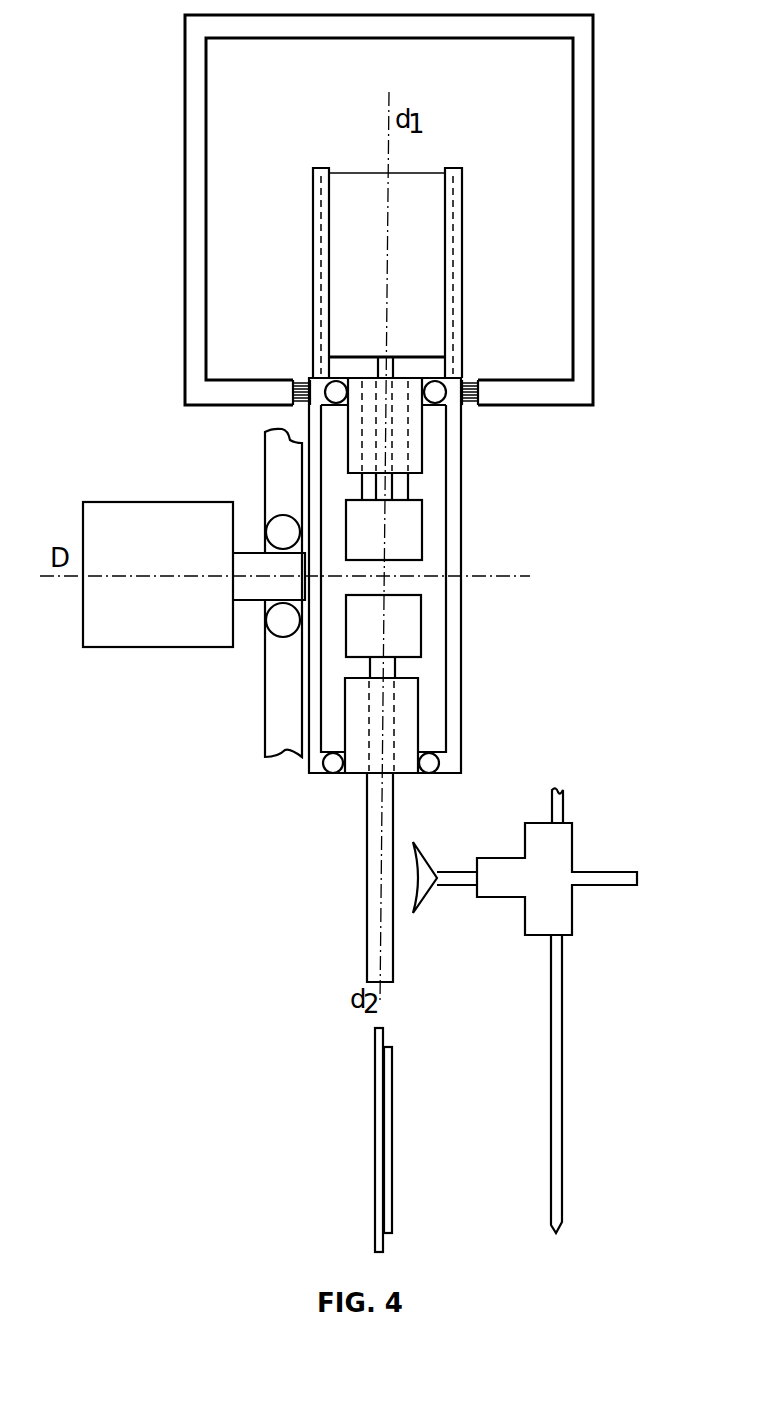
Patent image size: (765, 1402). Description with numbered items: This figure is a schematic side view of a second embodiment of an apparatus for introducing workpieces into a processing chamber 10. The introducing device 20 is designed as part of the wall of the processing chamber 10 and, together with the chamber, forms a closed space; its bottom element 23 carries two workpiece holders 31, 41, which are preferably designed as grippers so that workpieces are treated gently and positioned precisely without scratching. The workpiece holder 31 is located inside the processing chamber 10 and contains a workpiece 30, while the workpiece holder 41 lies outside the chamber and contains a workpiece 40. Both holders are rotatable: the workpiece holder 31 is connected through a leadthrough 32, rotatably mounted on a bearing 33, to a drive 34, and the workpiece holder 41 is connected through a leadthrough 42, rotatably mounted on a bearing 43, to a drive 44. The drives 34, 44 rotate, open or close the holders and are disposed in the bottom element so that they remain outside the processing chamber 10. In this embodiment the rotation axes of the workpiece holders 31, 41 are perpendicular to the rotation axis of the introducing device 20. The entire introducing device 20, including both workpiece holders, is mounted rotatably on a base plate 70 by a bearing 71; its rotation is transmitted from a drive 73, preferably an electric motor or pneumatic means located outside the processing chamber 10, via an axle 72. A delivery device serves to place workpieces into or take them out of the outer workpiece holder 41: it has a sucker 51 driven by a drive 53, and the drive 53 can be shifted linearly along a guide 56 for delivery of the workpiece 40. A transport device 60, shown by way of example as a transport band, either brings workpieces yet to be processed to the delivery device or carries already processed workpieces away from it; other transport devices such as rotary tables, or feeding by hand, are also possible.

The processing chamber 10 is at (188, 93).
The introducing device 20 is at (428, 614).
The bottom element 23 is at (455, 605).
The workpiece 30 is at (350, 223).
The workpiece holder 31 is at (318, 360).
The leadthrough 32 is at (413, 458).
The bearing 33 is at (442, 408).
The drive 34 is at (410, 528).
The workpiece 40 is at (385, 1205).
The workpiece holder 41 is at (375, 840).
The leadthrough 42 is at (362, 747).
The bearing 43 is at (435, 762).
The drive 44 is at (408, 632).
The suction device 51 is at (452, 878).
The drive 53 is at (558, 907).
The guide 56 is at (552, 1043).
The transport device 60 is at (378, 1133).
The base plate 70 is at (283, 713).
The bearing 71 is at (282, 528).
The axle 72 is at (255, 583).
The drive 73 is at (147, 600).